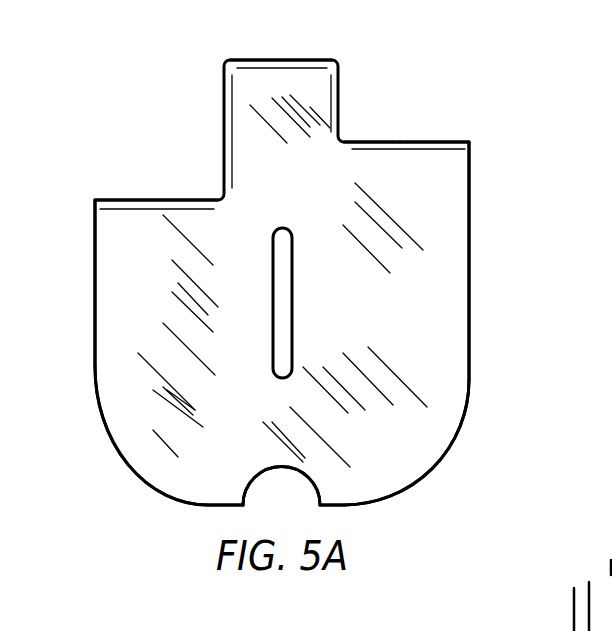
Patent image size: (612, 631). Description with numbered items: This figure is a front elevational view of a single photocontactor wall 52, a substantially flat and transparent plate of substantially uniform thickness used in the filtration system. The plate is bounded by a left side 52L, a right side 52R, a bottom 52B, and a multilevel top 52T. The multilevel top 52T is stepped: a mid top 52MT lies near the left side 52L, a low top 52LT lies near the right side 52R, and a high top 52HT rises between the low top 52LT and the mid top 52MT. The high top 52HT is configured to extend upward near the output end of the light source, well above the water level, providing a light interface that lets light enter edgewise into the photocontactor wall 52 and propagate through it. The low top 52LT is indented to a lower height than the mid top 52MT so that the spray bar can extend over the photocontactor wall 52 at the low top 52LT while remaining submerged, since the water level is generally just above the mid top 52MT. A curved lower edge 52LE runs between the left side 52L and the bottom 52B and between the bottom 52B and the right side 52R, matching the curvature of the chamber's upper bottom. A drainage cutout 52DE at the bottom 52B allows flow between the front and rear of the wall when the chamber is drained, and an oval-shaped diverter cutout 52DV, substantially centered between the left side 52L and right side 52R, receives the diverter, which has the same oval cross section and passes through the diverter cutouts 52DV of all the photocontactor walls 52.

The photocontactor wall 52 is at (469, 150).
The high top 52HT is at (282, 60).
The multilevel top 52T is at (355, 140).
The mid top 52MT is at (427, 140).
The low top 52LT is at (157, 200).
The right side 52R is at (95, 272).
The left side 52L is at (469, 252).
The curved lower edge 52LE is at (135, 468).
The bottom 52B is at (208, 507).
The drainage cutout 52DE is at (318, 490).
The diverter cutout 52DV is at (292, 316).